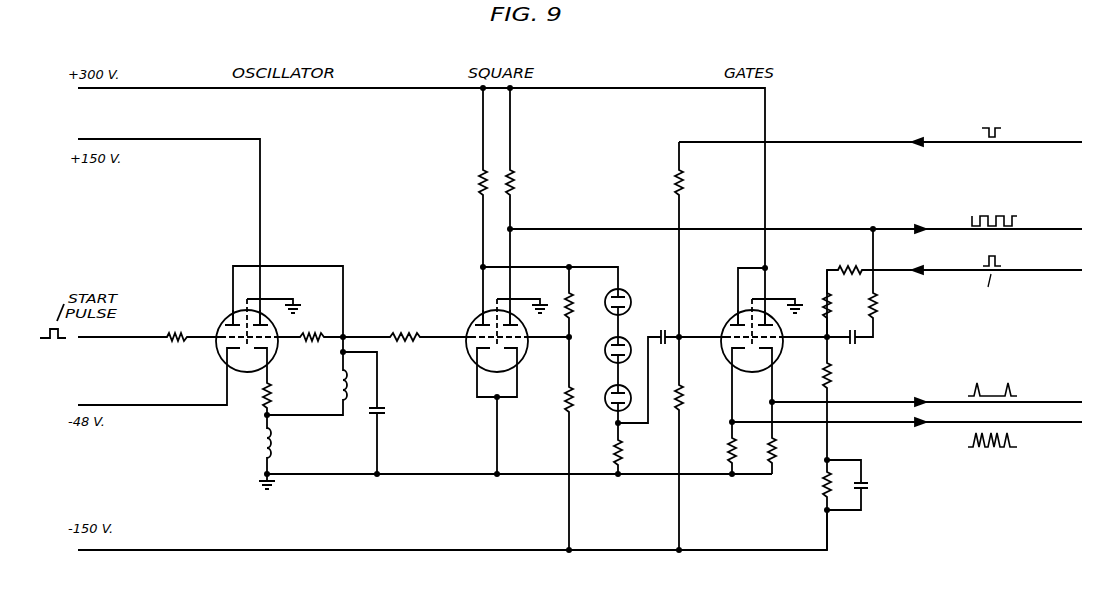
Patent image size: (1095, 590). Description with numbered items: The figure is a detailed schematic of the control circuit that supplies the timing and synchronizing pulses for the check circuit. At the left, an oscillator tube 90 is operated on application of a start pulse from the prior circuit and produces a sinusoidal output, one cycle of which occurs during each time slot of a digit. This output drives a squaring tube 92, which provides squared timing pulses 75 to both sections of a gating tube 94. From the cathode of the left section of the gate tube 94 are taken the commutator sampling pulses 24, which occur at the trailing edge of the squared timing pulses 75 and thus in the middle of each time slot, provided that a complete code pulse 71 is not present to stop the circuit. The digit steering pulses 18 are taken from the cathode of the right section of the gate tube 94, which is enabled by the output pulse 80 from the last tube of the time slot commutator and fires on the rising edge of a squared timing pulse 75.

The oscillator tube 90 is at (221, 356).
The squaring tube 92 is at (470, 357).
The gating tube 94 is at (728, 318).
The complete code pulse 71 is at (981, 130).
The squared timing pulses 75 is at (1019, 220).
The output pulse 80 is at (1003, 262).
The digit steering pulses 18 is at (1007, 390).
The commutator sampling pulses 24 is at (1019, 441).